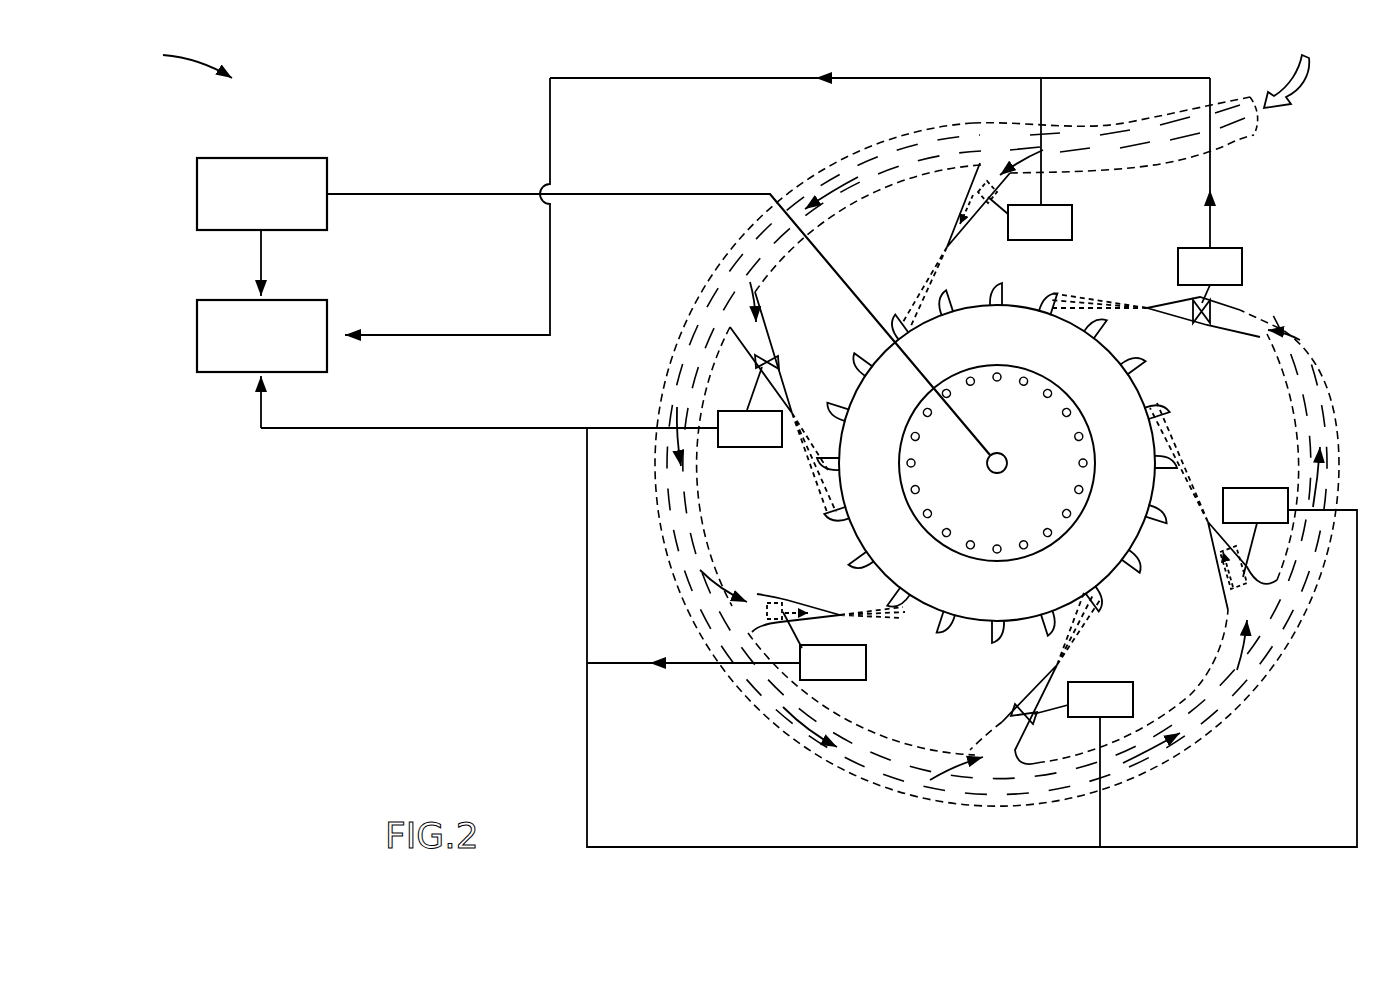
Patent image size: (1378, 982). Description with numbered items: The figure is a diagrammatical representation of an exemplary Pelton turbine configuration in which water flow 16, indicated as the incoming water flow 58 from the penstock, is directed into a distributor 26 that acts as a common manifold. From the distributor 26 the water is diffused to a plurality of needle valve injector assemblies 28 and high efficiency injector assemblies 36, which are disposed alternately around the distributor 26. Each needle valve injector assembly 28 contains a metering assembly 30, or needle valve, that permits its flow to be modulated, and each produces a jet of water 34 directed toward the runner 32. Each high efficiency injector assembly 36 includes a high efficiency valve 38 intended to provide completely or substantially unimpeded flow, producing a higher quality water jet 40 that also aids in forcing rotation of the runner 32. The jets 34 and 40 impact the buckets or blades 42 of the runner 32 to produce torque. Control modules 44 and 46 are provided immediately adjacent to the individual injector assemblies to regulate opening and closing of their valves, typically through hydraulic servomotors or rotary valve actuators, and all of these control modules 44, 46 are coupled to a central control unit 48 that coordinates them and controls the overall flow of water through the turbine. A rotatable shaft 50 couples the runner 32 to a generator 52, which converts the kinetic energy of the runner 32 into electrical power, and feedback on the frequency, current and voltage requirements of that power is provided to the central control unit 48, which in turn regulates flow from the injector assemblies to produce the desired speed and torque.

The water flow 16 is at (1143, 140).
The distributor 26 is at (1232, 152).
The needle valve injector assembly 28 is at (945, 243).
The metering assembly 30 is at (967, 200).
The runner 32 is at (1012, 570).
The jet of water 34 is at (918, 290).
The high efficiency injector assembly 36 is at (790, 398).
The high efficiency valve 38 is at (790, 368).
The higher quality water jet 40 is at (1100, 298).
The buckets or blades 42 is at (1100, 598).
The control module 44 is at (1242, 265).
The control module 46 is at (1072, 223).
The central control unit 48 is at (197, 337).
The rotatable shaft 50 is at (1000, 475).
The generator 52 is at (268, 158).
The water flow 58 is at (1298, 91).